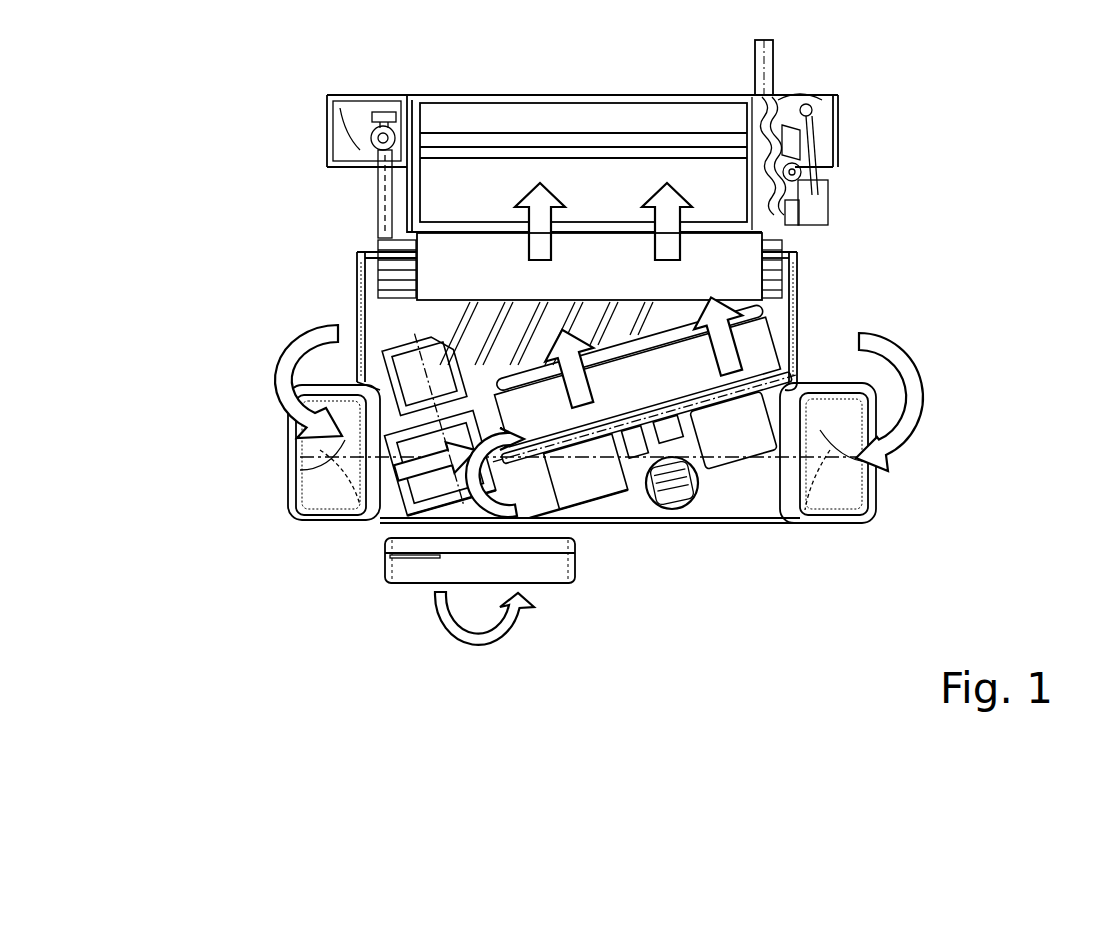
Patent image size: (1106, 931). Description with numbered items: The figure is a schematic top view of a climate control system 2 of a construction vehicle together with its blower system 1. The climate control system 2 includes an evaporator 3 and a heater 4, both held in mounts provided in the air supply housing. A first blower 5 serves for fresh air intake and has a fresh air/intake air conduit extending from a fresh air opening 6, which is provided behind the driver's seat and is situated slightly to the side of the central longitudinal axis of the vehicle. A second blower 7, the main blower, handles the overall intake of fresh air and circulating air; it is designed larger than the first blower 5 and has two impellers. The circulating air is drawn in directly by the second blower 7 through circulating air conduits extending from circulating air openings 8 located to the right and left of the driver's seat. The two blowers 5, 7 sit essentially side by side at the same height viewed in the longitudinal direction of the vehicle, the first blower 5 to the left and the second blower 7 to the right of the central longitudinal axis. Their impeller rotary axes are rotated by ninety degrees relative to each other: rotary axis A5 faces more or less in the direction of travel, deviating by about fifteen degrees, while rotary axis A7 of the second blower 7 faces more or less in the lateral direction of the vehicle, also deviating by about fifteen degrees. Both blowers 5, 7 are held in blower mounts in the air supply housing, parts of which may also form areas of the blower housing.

The blower system 1 is at (982, 395).
The climate control system 2 is at (950, 194).
The evaporator 3 is at (610, 284).
The heater 4 is at (610, 199).
The first blower 5 is at (428, 495).
The rotary axis A5 is at (428, 375).
The fresh air opening 6 is at (517, 582).
The second blower 7 is at (750, 450).
The rotary axis A7 is at (597, 432).
The circulating air openings 8 is at (332, 483).